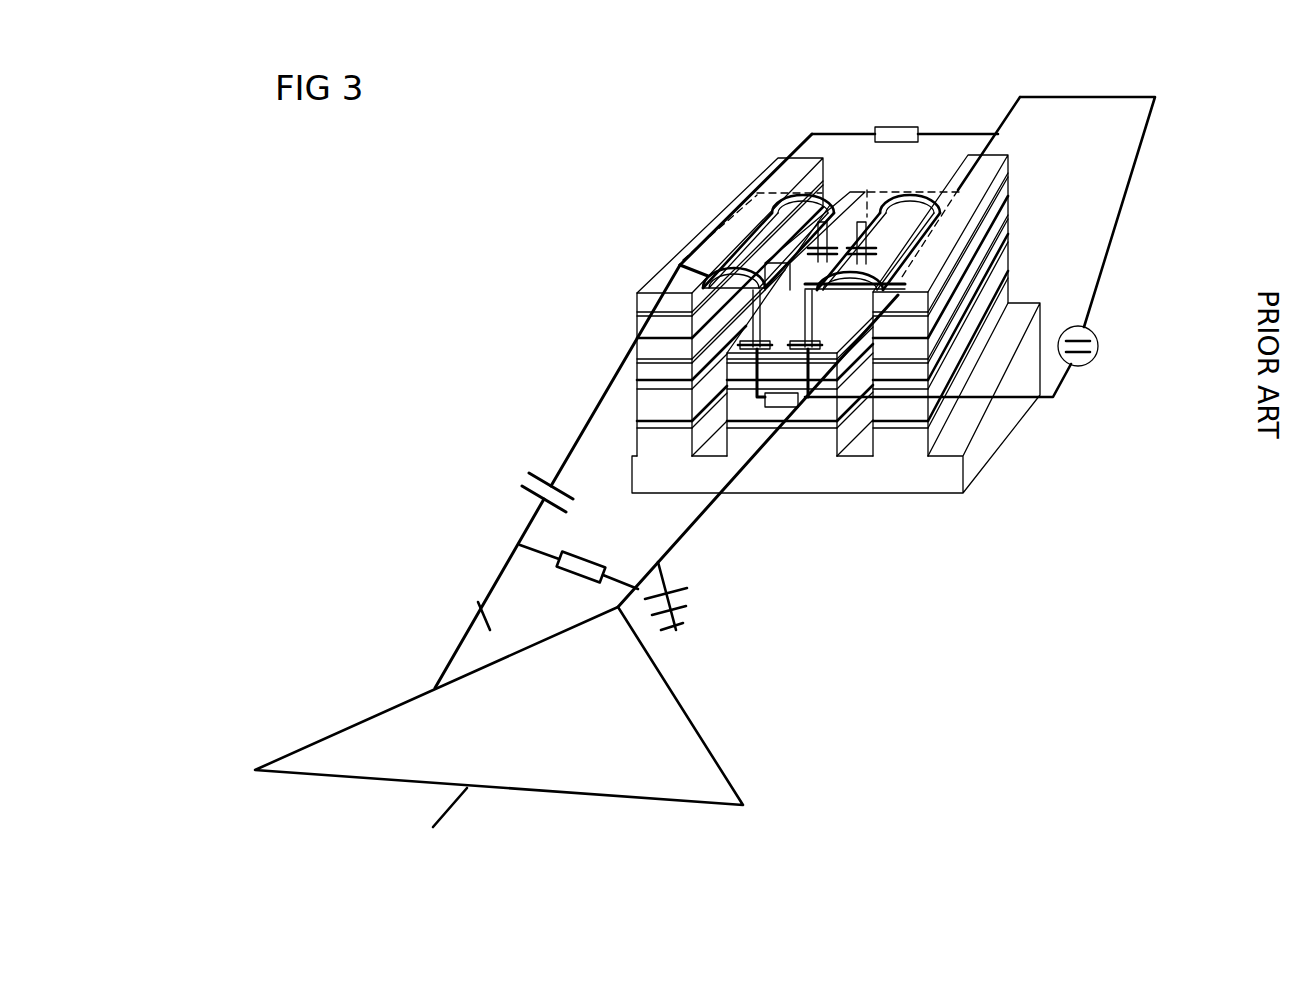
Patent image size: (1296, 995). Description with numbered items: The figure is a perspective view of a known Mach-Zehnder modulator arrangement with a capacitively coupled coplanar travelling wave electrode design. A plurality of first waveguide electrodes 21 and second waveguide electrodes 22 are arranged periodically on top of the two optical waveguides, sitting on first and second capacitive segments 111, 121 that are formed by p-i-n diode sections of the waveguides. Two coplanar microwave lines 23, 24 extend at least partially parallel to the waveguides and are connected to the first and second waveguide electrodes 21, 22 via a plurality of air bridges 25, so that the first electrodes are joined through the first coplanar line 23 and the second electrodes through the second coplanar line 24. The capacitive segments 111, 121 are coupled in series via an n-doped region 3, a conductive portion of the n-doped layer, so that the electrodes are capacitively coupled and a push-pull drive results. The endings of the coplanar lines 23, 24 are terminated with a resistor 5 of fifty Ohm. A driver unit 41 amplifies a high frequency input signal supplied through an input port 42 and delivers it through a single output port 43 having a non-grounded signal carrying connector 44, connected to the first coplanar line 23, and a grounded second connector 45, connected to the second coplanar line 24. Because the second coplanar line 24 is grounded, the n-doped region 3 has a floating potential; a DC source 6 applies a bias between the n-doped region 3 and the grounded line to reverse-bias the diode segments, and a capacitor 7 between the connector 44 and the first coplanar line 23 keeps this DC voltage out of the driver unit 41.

The n-doped region 3 is at (823, 417).
The resistor 5 is at (895, 128).
The DC source 6 is at (1088, 362).
The capacitor 7 is at (542, 478).
The first waveguide electrodes 21 is at (778, 280).
The second waveguide electrodes 22 is at (823, 220).
The first coplanar microwave line 23 is at (728, 240).
The second coplanar microwave line 24 is at (973, 200).
The air bridges 25 is at (918, 192).
The driver unit 41 is at (698, 752).
The input port 42 is at (470, 795).
The output port 43 is at (481, 605).
The signal carrying connector 44 is at (433, 685).
The grounded second connector 45 is at (614, 612).
The first capacitive segments 111 is at (748, 342).
The second capacitive segments 121 is at (898, 307).